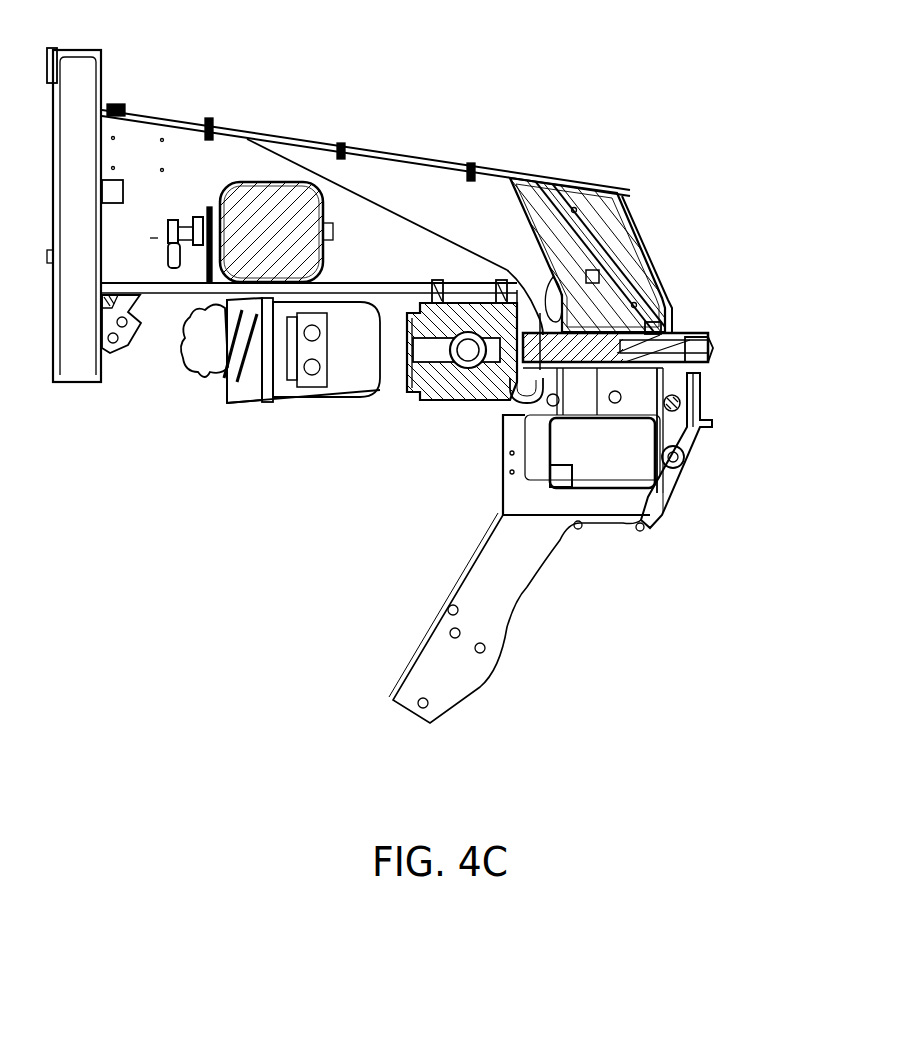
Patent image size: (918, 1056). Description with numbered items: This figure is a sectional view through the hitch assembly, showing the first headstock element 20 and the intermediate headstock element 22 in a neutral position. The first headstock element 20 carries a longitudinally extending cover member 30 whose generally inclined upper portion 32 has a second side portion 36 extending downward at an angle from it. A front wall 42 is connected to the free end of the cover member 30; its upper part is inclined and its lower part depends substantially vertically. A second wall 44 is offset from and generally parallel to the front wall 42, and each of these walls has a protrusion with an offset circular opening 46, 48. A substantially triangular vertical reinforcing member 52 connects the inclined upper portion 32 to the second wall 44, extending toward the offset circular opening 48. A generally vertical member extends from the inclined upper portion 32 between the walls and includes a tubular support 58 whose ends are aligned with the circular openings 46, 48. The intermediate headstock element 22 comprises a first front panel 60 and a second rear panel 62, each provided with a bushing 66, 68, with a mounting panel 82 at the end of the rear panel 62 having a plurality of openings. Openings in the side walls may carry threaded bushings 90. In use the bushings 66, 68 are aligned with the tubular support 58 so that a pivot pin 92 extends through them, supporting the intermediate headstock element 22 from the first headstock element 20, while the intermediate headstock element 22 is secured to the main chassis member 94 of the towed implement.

The first headstock element 20 is at (406, 196).
The intermediate headstock element 22 is at (754, 451).
The longitudinally extending cover member 30 is at (677, 229).
The inclined upper portion 32 is at (545, 180).
The second side portion 36 is at (163, 157).
The front wall 42 is at (652, 250).
The second wall 44 is at (520, 212).
The circular opening 46 is at (667, 323).
The circular opening 48 is at (539, 311).
The vertical reinforcing member 52 is at (382, 178).
The tubular support 58 is at (594, 430).
The first front panel 60 is at (700, 383).
The second rear panel 62 is at (497, 372).
The bushing 66 is at (697, 323).
The bushing 68 is at (520, 375).
The mounting panel 82 is at (458, 293).
The threaded bushing 90 is at (683, 460).
The pivot pin 92 is at (708, 336).
The main chassis member 94 is at (623, 487).